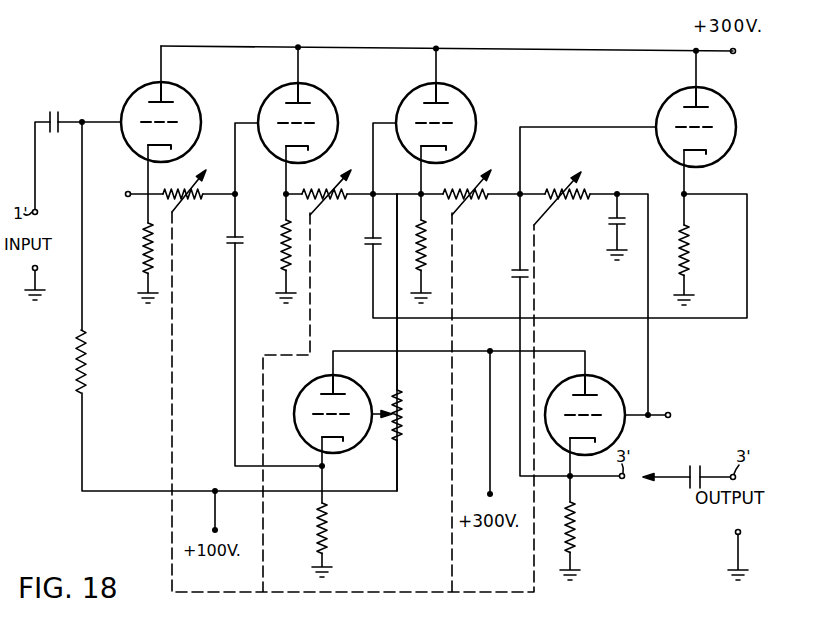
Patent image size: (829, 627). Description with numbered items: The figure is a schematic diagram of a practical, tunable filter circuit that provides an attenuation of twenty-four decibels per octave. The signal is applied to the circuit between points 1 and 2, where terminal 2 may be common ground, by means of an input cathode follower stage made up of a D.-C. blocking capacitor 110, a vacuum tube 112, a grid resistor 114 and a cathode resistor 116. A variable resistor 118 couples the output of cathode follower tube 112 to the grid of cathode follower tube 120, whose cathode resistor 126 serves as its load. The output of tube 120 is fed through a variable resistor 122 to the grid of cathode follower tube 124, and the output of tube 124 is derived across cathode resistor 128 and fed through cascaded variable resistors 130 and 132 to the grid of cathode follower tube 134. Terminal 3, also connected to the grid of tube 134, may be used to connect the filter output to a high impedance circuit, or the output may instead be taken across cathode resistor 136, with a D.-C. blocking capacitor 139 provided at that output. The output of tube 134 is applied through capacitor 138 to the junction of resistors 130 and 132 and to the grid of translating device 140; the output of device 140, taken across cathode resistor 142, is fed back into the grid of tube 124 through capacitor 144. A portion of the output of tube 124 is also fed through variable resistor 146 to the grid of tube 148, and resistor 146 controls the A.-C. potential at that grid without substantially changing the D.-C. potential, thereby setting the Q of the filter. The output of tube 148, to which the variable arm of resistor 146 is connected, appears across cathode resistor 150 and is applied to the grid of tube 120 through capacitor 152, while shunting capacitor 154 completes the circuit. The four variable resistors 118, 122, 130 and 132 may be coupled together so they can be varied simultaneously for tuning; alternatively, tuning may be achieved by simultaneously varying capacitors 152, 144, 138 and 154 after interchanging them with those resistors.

The D.-C. blocking capacitor 110 is at (60, 112).
The vacuum tube 112 is at (190, 98).
The grid resistor 114 is at (87, 372).
The cathode resistor 116 is at (146, 251).
The variable resistor 118 is at (189, 202).
The cathode follower tube 120 is at (327, 100).
The variable resistor 122 is at (340, 203).
The cathode follower tube 124 is at (466, 101).
The cathode resistor 126 is at (284, 256).
The cathode resistor 128 is at (424, 266).
The variable resistor 130 is at (487, 203).
The variable resistor 132 is at (574, 203).
The cathode follower tube 134 is at (612, 387).
The cathode resistor 136 is at (575, 530).
The capacitor 138 is at (516, 266).
The D.-C. blocking capacitor 139 is at (689, 470).
The translating device 140 is at (661, 101).
The cathode resistor 142 is at (687, 266).
The capacitor 144 is at (366, 242).
The variable resistor 146 is at (398, 430).
The tube 148 is at (360, 386).
The cathode resistor 150 is at (327, 523).
The capacitor 152 is at (229, 241).
The shunting capacitor 154 is at (610, 232).
The point 1 is at (125, 195).
The terminal 2 is at (32, 270).
The terminal 3 is at (670, 417).